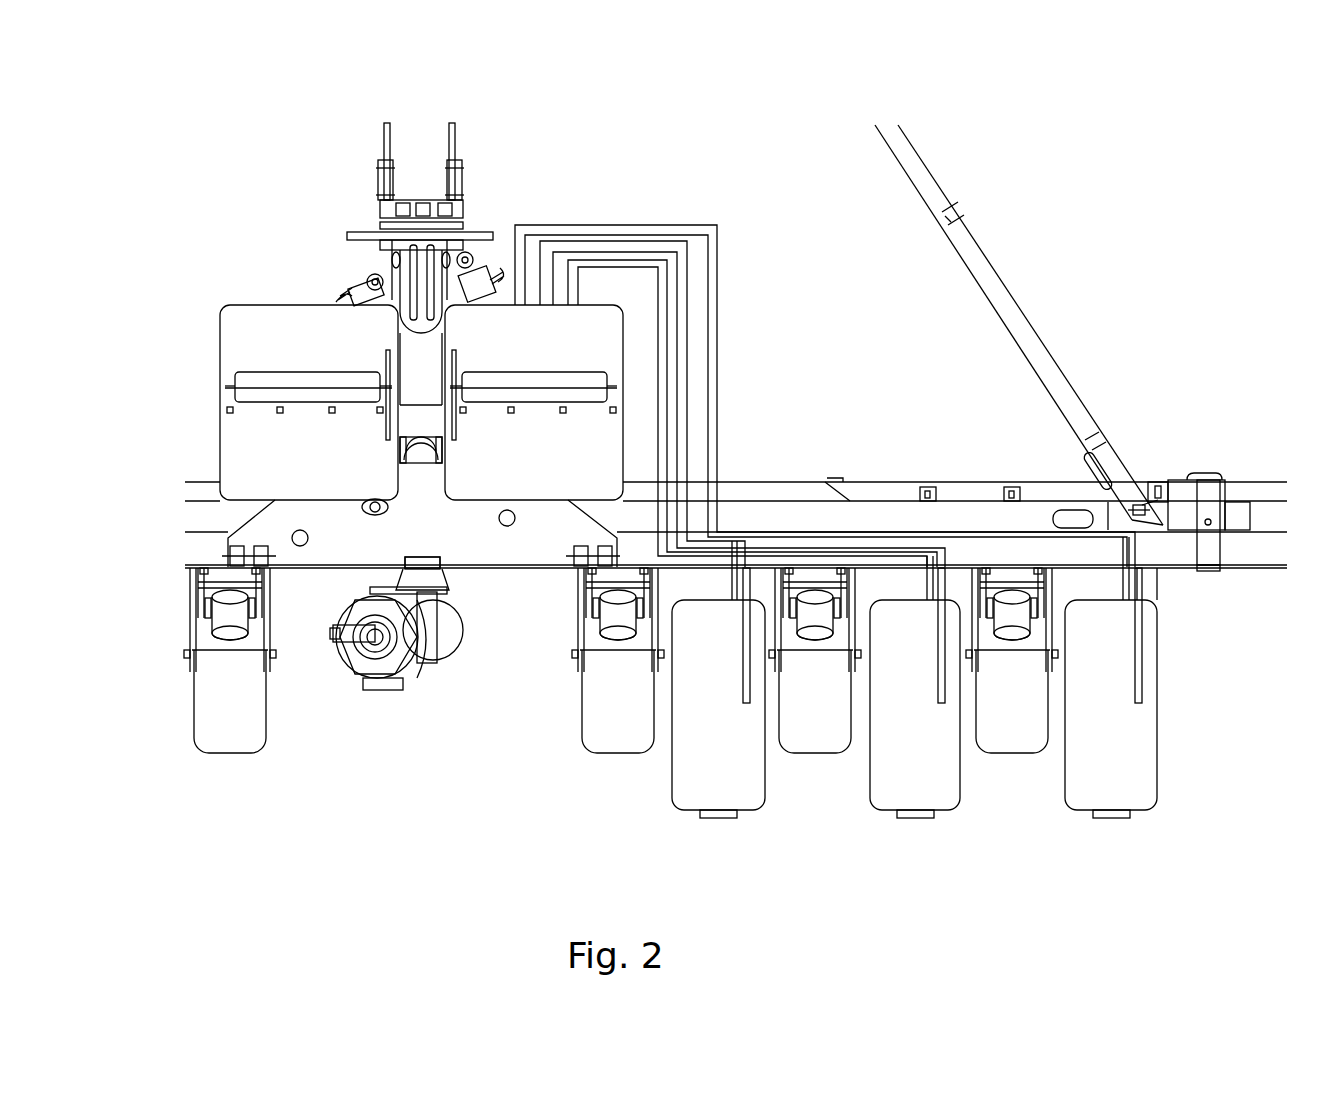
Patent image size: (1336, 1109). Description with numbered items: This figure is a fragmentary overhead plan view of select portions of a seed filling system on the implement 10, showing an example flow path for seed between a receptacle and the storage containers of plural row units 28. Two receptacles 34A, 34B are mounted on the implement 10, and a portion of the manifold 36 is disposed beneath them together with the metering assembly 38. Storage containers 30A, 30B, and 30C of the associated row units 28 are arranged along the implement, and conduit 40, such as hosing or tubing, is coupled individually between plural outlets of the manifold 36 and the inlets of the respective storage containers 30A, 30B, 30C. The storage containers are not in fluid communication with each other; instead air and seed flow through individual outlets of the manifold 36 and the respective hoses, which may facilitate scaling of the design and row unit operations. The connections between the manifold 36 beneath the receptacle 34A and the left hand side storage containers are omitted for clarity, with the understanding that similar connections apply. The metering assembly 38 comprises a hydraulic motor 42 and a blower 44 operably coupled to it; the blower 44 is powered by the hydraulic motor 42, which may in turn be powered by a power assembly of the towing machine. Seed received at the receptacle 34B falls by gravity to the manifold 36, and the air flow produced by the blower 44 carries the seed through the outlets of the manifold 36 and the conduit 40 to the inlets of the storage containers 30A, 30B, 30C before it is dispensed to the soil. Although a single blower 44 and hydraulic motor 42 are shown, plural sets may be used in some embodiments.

The implement 10 is at (205, 175).
The row units 28 is at (1185, 755).
The storage container 30A is at (737, 790).
The storage container 30B is at (937, 790).
The storage container 30C is at (1127, 795).
The receptacle 34A is at (350, 476).
The receptacle 34B is at (508, 476).
The manifold 36 is at (437, 578).
The metering assembly 38 is at (415, 677).
The conduit 40 is at (640, 207).
The hydraulic motor 42 is at (352, 633).
The blower 44 is at (437, 640).